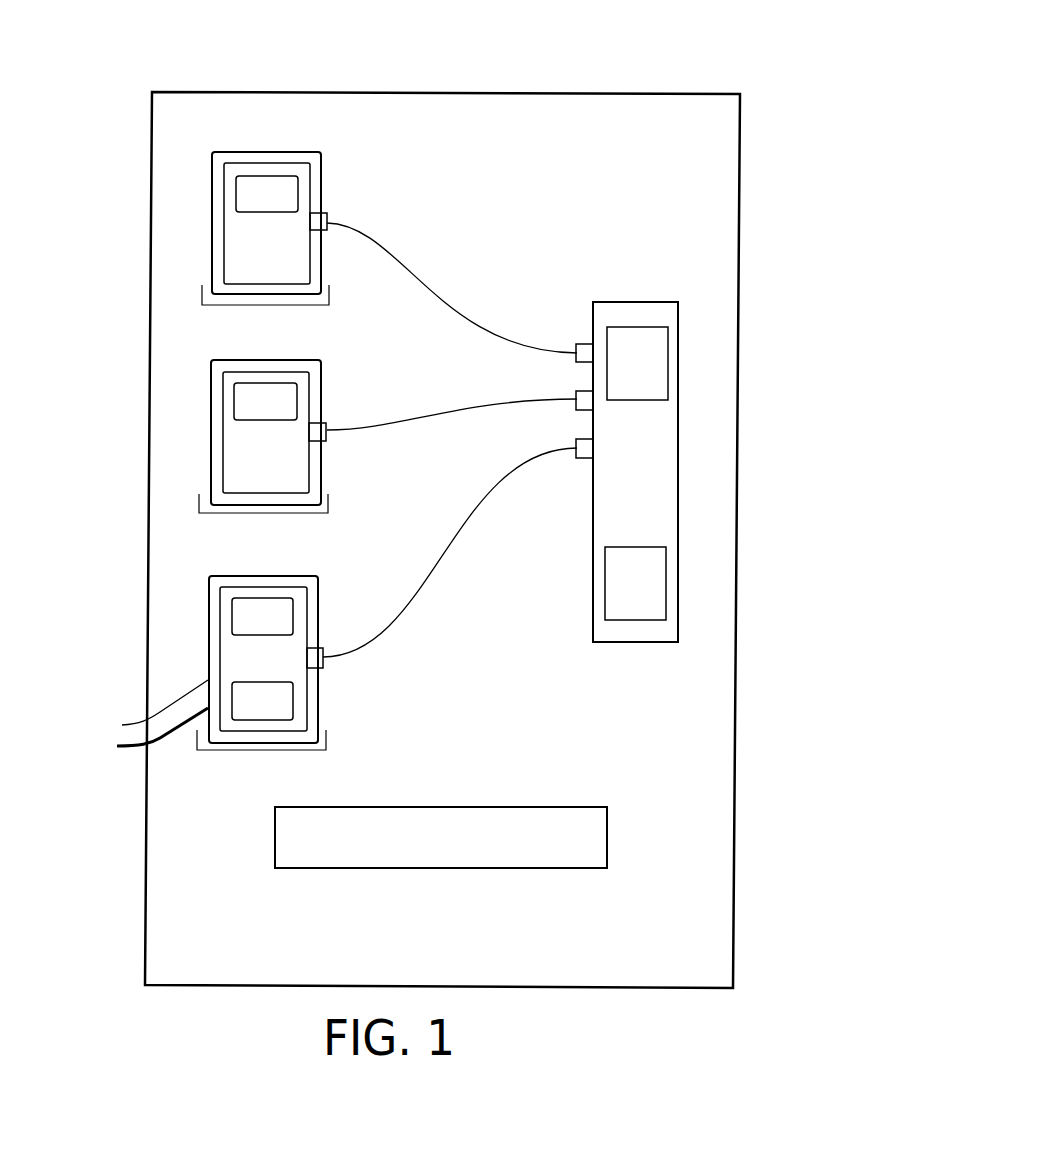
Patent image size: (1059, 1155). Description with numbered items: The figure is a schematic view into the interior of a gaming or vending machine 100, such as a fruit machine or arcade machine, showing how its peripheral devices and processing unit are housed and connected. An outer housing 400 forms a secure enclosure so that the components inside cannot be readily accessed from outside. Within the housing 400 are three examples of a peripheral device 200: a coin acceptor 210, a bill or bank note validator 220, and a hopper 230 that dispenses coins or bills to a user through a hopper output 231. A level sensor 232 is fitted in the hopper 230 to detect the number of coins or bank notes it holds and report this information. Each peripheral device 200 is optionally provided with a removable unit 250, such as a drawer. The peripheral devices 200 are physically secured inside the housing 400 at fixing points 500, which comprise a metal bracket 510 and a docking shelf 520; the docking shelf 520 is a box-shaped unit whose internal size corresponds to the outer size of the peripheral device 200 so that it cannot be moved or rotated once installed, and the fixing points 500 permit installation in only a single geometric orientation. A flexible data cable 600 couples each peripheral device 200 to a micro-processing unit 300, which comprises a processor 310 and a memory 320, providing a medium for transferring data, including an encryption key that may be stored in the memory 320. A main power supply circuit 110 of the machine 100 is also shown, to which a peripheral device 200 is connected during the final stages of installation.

The gaming or vending machine 100 is at (442, 502).
The main power supply circuit 110 is at (461, 851).
The peripheral device 200 is at (256, 466).
The coin acceptor 210 is at (286, 257).
The bill or bank note validator 220 is at (286, 466).
The hopper 230 is at (283, 669).
The hopper output 231 is at (117, 746).
The level sensor 232 is at (283, 712).
The removable unit 250 is at (286, 204).
The micro-processing unit 300 is at (627, 472).
The processor 310 is at (656, 376).
The memory 320 is at (656, 592).
The outer housing 400 is at (563, 94).
The fixing points 500 is at (340, 279).
The metal bracket 510 is at (331, 297).
The docking shelf 520 is at (321, 163).
The flexible data cable 600 is at (430, 272).